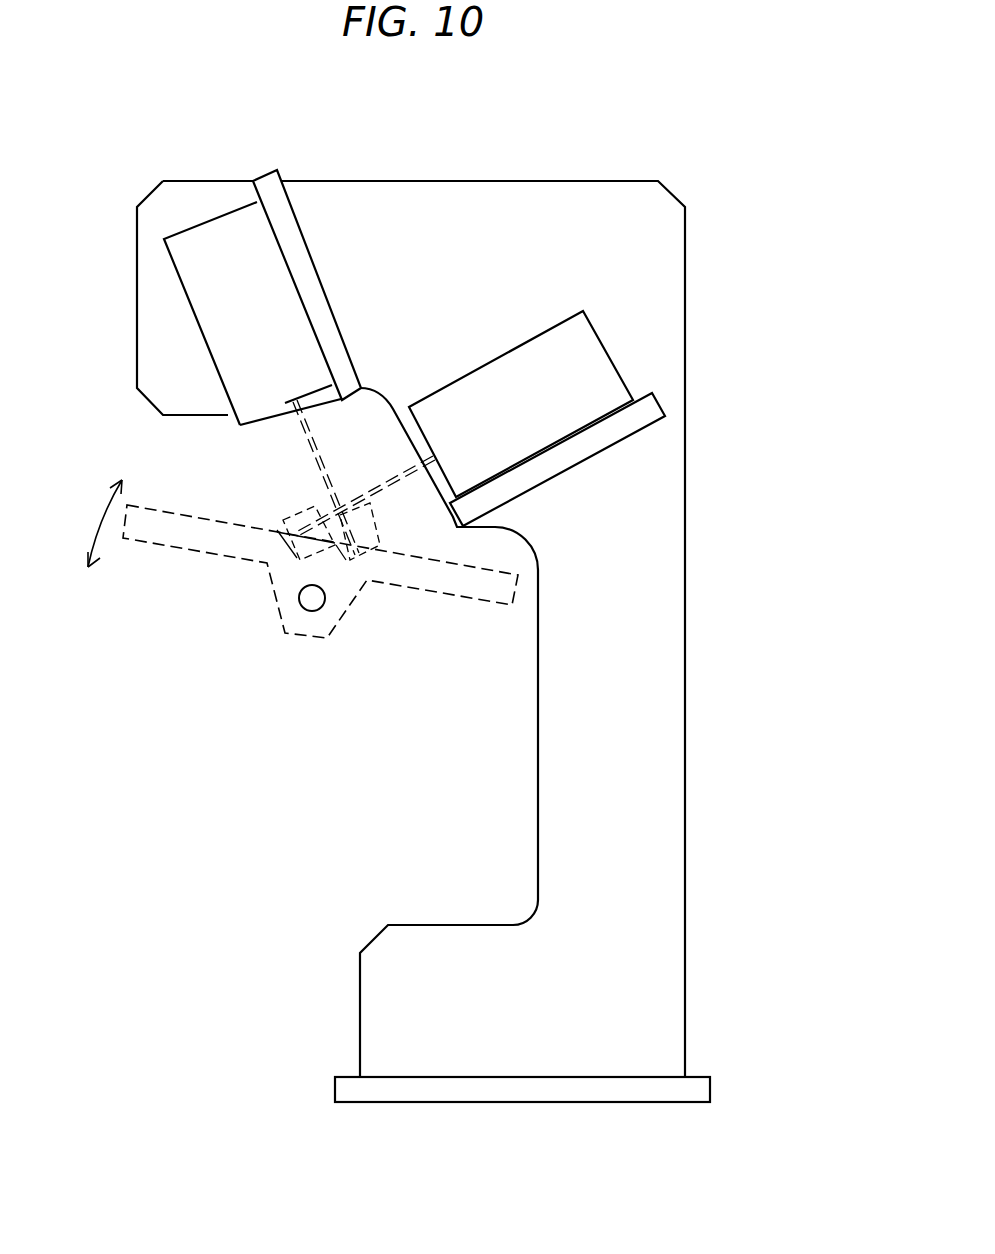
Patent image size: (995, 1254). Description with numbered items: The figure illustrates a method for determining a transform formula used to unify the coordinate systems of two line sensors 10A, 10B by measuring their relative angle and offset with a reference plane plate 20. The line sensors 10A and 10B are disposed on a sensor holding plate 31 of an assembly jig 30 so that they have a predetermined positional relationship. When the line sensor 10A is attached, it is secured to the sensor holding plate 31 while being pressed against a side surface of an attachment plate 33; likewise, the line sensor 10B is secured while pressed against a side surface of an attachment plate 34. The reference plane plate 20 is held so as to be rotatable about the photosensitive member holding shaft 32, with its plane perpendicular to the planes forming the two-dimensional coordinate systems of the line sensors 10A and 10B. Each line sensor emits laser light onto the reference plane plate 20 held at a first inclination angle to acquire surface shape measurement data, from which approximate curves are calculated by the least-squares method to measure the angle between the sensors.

The line sensor 10A is at (175, 273).
The line sensor 10B is at (612, 357).
The reference plane plate 20 is at (167, 538).
The assembly jig 30 is at (451, 585).
The sensor holding plate 31 is at (673, 833).
The photosensitive member holding shaft 32 is at (303, 603).
The attachment plate 33 is at (288, 227).
The attachment plate 34 is at (620, 430).